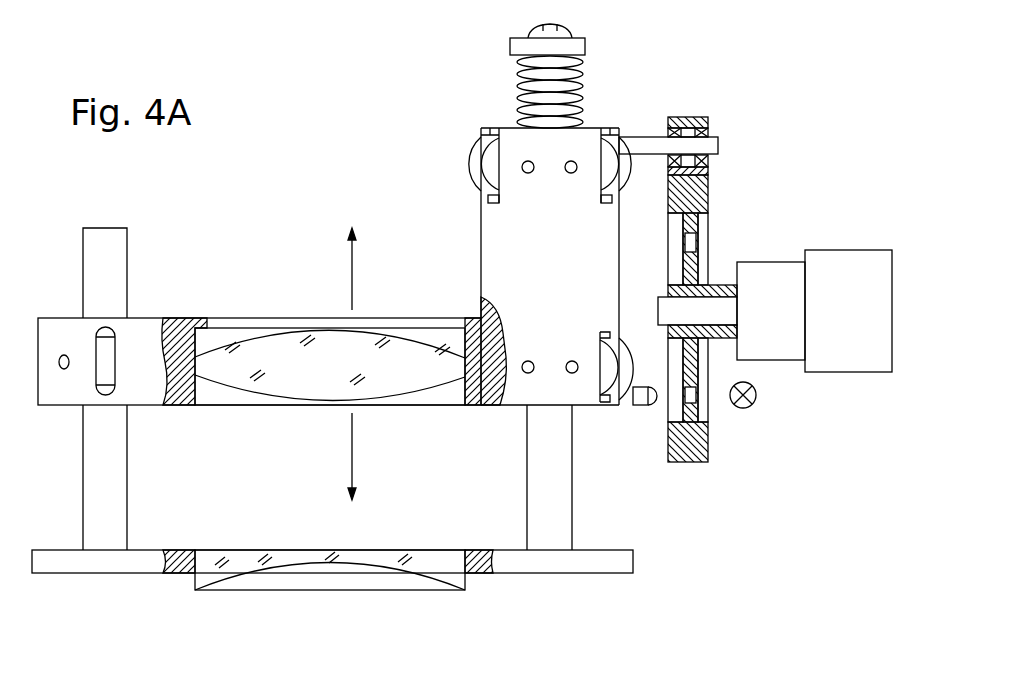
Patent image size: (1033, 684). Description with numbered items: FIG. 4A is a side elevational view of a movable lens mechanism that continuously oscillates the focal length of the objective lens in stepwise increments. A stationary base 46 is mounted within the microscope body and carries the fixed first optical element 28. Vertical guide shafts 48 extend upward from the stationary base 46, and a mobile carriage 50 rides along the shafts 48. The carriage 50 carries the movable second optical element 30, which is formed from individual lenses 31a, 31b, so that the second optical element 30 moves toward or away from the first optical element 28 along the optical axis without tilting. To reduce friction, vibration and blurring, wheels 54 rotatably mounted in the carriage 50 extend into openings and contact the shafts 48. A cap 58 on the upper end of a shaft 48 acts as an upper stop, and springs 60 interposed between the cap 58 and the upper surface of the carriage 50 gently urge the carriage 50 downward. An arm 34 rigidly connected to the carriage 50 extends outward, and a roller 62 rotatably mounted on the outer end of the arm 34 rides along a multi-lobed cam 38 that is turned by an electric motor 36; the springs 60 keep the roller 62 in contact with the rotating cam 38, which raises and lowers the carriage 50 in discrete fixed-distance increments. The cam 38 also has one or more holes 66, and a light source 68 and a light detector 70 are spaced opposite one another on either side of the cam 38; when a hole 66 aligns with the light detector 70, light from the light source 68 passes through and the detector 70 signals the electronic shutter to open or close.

The first optical element 28 is at (208, 553).
The second optical element 30 is at (272, 362).
The individual lens 31a is at (217, 333).
The individual lens 31b is at (273, 383).
The arm 34 is at (712, 142).
The electric motor 36 is at (866, 297).
The multi-lobed cam 38 is at (693, 188).
The stationary base 46 is at (55, 562).
The guide shafts 48 is at (96, 240).
The mobile carriage 50 is at (527, 259).
The wheels 54 is at (475, 165).
The cap 58 is at (583, 45).
The springs 60 is at (522, 82).
The roller 62 is at (690, 116).
The holes 66 is at (693, 243).
The light source 68 is at (743, 408).
The light detector 70 is at (639, 407).